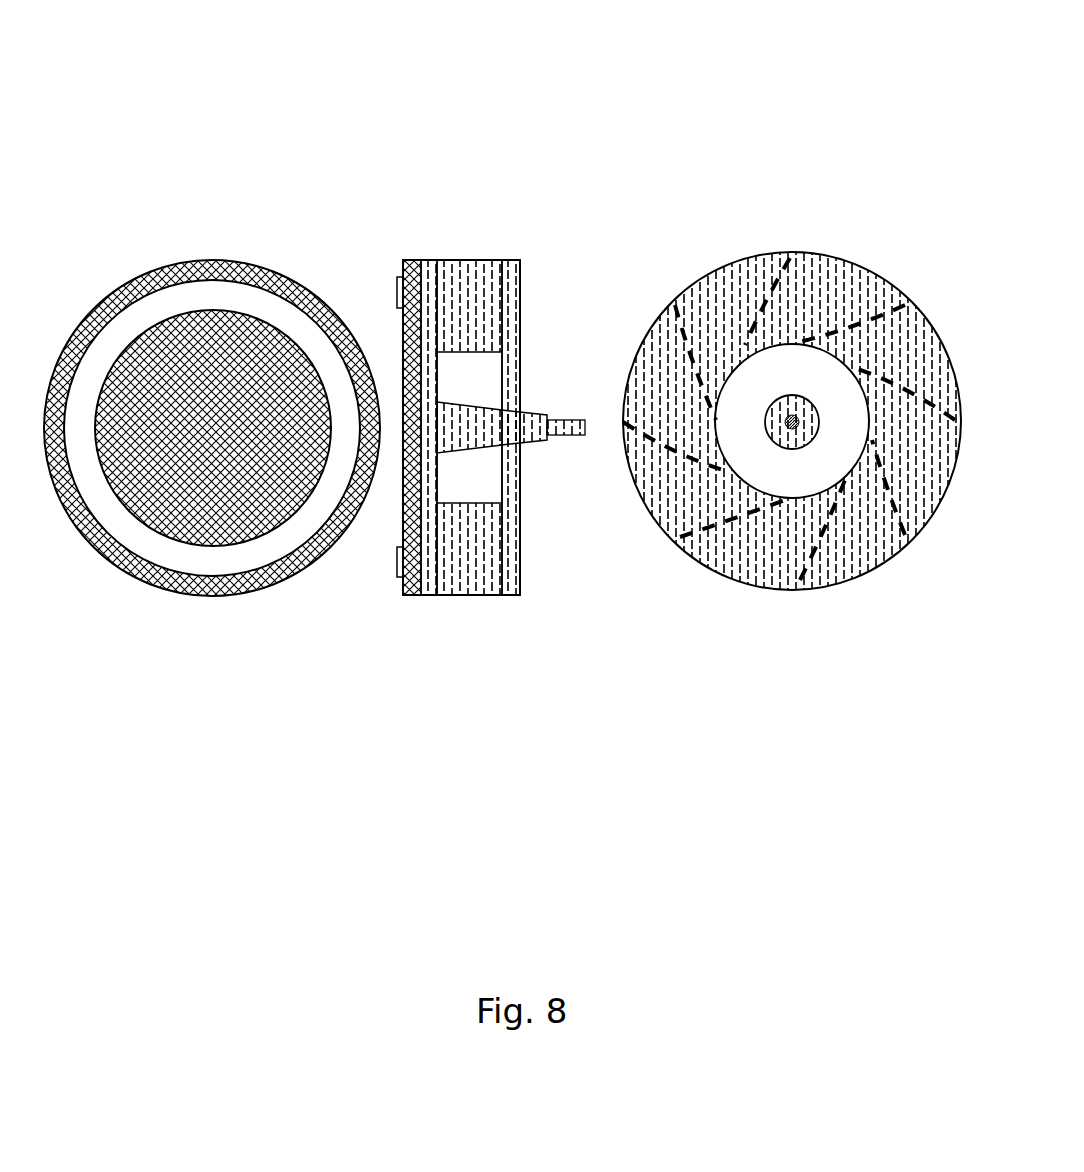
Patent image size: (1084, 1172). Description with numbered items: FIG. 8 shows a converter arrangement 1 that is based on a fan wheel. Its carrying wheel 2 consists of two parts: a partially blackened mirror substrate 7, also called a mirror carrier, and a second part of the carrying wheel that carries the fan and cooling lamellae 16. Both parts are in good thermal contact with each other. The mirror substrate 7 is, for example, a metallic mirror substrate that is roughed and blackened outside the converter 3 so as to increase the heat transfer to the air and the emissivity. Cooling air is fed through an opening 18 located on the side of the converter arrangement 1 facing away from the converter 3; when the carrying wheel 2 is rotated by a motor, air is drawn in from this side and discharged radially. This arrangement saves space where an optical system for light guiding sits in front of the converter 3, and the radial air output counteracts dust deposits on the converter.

The converter arrangement 1 is at (729, 230).
The carrying wheel 2 is at (181, 598).
The converter 3 is at (391, 296).
The mirror substrate 7 is at (391, 598).
The fan and cooling lamellae 16 is at (884, 531).
The opening 18 is at (754, 436).